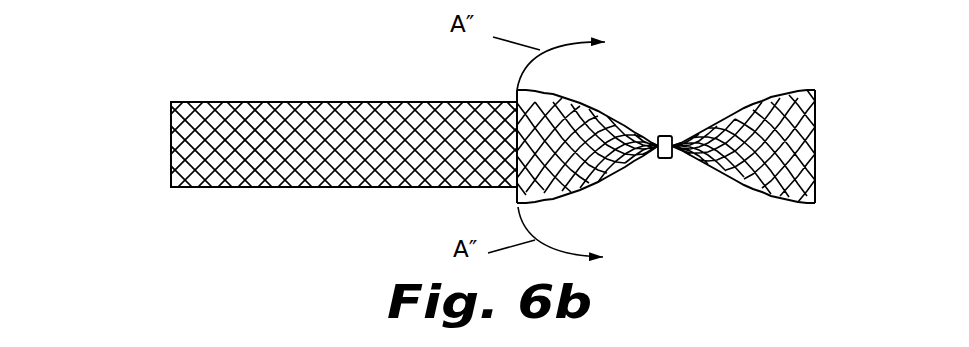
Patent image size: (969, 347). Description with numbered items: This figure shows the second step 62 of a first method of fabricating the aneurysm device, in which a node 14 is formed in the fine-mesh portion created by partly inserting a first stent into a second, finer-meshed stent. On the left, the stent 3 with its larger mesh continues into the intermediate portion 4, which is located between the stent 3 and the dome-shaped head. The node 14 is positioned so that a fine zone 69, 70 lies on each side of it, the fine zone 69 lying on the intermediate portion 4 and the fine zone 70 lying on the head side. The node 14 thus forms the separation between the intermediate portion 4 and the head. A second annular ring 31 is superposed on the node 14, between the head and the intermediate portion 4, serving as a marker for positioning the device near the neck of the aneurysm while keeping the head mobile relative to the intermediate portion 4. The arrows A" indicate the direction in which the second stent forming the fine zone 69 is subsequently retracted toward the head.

The second step 62 is at (157, 140).
The stent 3 is at (237, 188).
The intermediate portion 4 is at (505, 200).
The fine zone 69 is at (614, 186).
The second annular ring 31 is at (663, 135).
The node 14 is at (677, 168).
The fine zone 70 is at (777, 207).